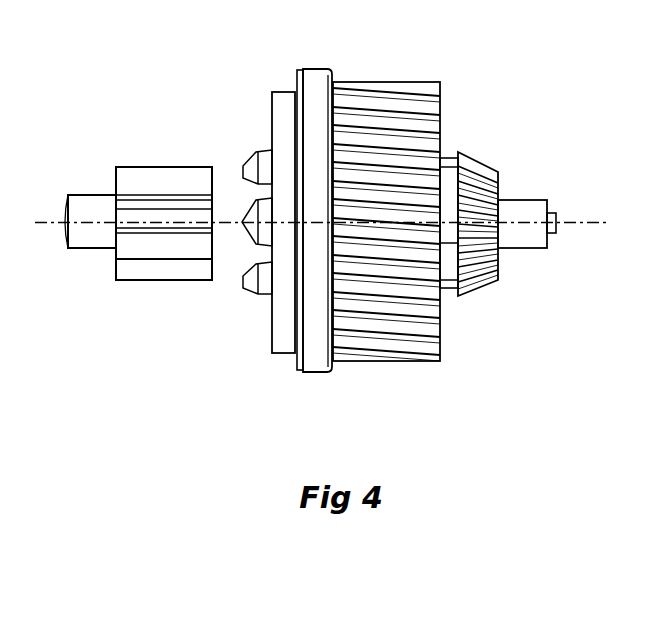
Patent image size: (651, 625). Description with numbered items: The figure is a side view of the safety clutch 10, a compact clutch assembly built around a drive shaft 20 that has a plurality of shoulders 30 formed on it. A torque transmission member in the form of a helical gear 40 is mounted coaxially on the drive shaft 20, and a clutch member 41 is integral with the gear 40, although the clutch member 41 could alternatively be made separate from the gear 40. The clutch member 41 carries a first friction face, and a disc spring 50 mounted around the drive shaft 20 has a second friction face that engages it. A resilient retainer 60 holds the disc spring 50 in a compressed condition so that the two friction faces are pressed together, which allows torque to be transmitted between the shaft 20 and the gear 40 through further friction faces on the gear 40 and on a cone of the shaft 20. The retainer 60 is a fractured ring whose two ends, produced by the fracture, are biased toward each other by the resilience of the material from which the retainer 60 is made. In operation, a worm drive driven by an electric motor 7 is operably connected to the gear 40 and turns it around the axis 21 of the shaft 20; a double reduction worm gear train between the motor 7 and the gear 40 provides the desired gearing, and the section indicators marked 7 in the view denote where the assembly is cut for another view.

The safety clutch 10 is at (650, 37).
The drive shaft 20 is at (526, 208).
The axis 21 is at (611, 225).
The shoulders 30 is at (250, 160).
The helical gear 40 is at (471, 340).
The clutch member 41 is at (316, 357).
The disc spring 50 is at (294, 363).
The resilient retainer 60 is at (282, 322).
The electric motor 7 is at (10, 222).